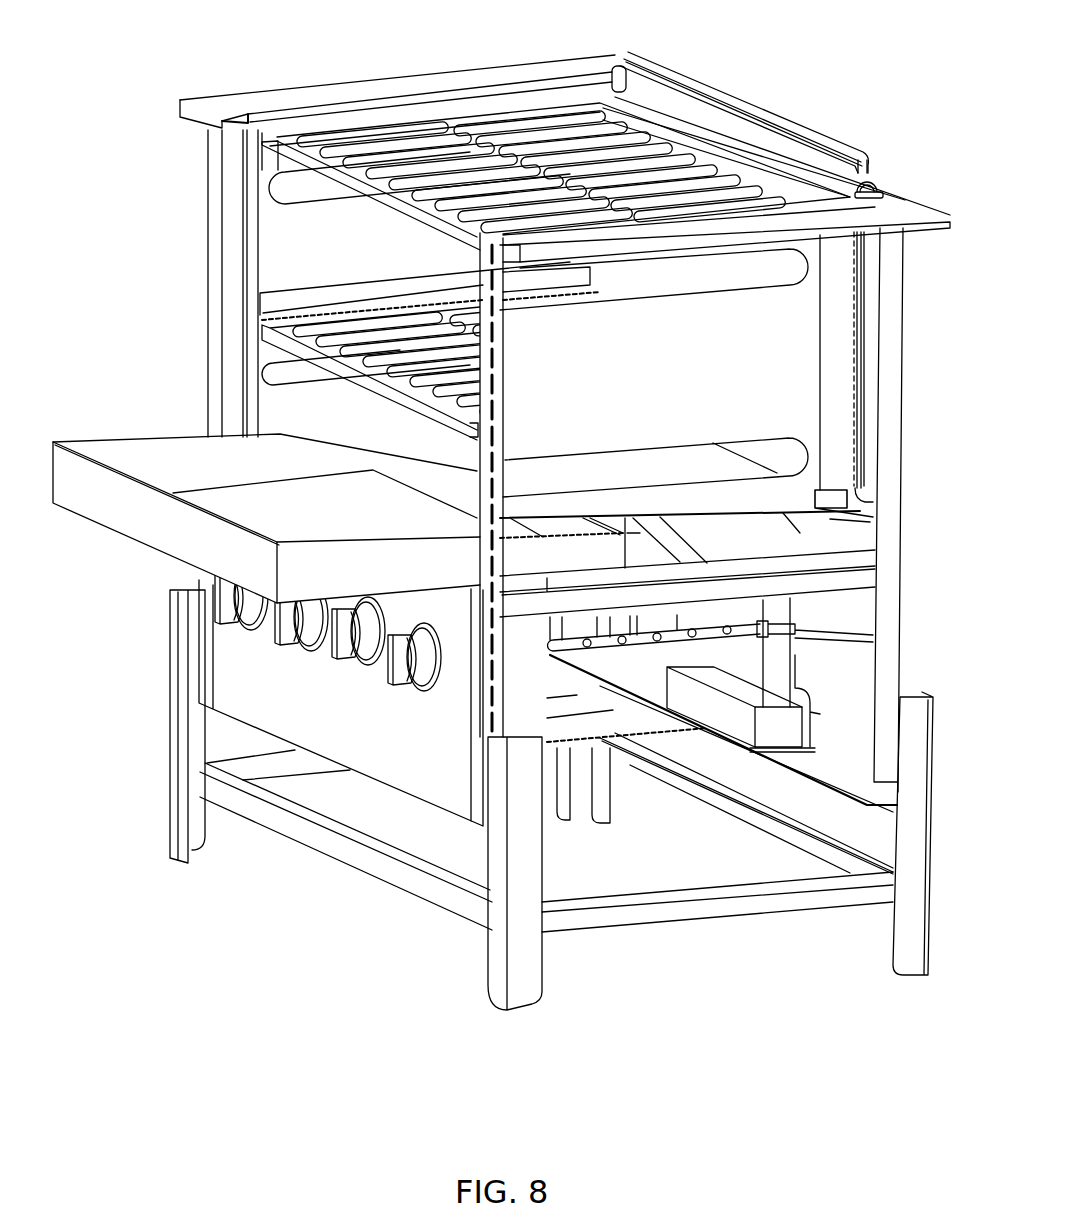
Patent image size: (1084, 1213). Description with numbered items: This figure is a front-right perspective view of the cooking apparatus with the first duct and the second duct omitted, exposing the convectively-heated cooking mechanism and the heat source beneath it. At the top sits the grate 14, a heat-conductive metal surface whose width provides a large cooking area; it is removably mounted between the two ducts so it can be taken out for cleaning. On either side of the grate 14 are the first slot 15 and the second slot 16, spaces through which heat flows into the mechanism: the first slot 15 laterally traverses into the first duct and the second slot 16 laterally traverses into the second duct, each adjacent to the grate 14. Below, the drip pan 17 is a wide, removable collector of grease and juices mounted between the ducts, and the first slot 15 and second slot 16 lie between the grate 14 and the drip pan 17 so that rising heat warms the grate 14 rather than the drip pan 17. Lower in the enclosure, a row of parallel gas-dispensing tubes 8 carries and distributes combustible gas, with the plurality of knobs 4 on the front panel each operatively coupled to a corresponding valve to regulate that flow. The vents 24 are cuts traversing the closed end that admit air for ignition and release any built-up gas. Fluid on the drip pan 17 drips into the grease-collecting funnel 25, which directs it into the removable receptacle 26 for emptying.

The knob 4 is at (231, 607).
The gas-dispensing tube 8 is at (745, 630).
The grate 14 is at (453, 124).
The first slot 15 is at (278, 186).
The second slot 16 is at (730, 287).
The drip pan 17 is at (340, 521).
The vent 24 is at (568, 718).
The grease-collecting funnel 25 is at (738, 552).
The receptacle 26 is at (794, 742).